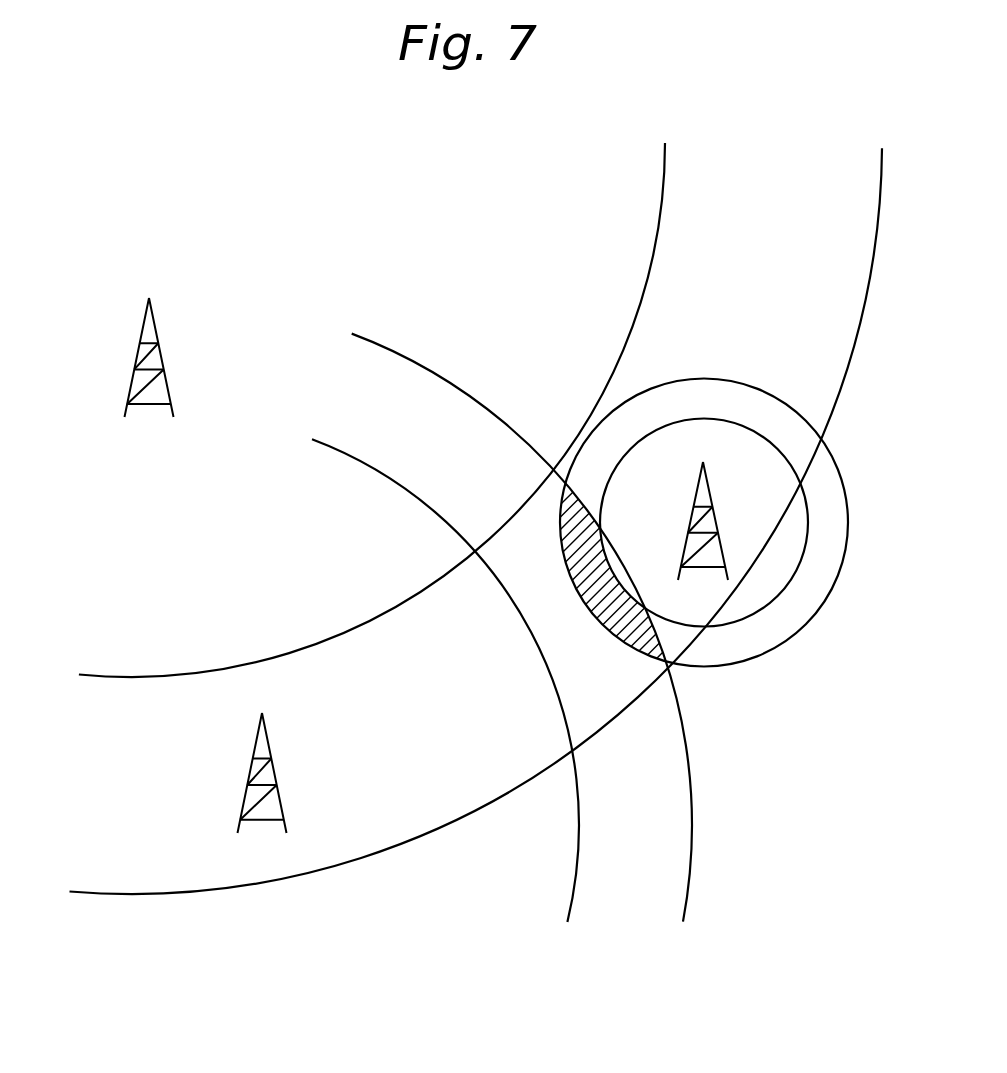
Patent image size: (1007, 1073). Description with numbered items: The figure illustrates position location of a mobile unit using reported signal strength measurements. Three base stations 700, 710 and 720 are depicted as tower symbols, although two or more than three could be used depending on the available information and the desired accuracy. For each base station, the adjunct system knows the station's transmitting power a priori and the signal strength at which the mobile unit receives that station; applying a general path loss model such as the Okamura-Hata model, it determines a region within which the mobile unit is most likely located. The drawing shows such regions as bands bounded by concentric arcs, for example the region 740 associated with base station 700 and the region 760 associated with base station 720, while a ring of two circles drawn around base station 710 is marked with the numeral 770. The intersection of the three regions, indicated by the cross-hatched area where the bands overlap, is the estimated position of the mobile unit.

The base station 700 is at (161, 357).
The base station 710 is at (692, 518).
The base station 720 is at (275, 772).
The region 740 is at (121, 679).
The region 760 is at (690, 831).
The third annular location region 770 is at (740, 583).